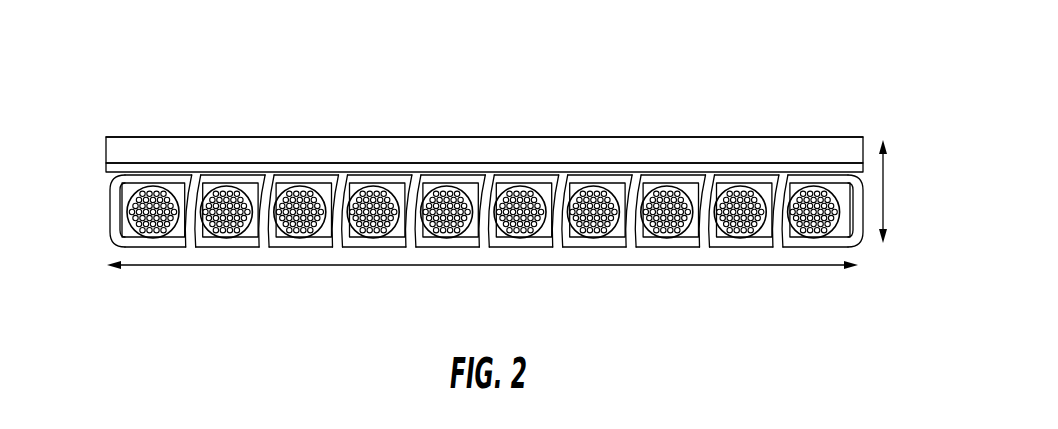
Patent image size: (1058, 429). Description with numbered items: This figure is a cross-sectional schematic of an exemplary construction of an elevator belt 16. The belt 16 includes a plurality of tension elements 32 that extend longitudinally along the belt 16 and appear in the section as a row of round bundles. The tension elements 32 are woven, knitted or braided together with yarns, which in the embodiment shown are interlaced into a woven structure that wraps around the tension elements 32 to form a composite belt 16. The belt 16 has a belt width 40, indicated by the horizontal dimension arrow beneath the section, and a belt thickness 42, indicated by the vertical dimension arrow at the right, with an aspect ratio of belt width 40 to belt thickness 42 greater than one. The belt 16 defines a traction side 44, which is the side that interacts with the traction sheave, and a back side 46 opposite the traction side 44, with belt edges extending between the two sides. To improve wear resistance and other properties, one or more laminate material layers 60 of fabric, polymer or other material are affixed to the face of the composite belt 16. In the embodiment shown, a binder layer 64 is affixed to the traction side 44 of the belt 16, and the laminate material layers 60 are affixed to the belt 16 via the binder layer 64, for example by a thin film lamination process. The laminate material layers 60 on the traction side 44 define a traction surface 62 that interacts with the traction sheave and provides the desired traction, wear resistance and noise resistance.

The belt 16 is at (788, 90).
The tension elements 32 is at (294, 208).
The belt width 40 is at (487, 266).
The belt thickness 42 is at (884, 197).
The traction side 44 is at (375, 173).
The back side 46 is at (670, 248).
The laminate material layers 60 is at (587, 148).
The traction surface 62 is at (717, 137).
The binder layer 64 is at (665, 168).